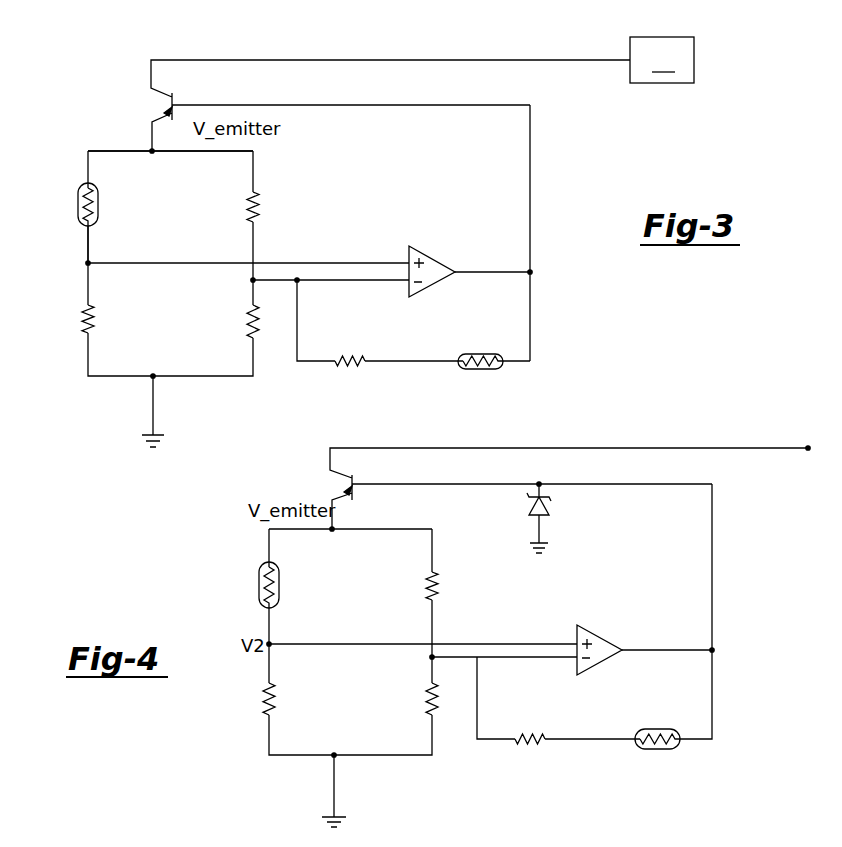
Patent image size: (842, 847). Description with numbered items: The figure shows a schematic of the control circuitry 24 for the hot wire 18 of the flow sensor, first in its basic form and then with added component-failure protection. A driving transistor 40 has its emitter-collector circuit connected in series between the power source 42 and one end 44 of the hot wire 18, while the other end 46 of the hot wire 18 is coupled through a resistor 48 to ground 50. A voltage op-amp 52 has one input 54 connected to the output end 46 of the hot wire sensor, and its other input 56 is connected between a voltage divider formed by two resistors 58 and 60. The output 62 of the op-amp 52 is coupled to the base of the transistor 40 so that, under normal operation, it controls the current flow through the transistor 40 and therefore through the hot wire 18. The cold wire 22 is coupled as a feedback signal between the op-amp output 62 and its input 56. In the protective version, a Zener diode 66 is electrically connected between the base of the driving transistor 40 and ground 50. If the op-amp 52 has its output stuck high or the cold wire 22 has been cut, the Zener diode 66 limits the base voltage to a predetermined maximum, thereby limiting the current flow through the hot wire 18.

In FIG. 3, the hot wire 18 is at (78, 198).
In FIG. 4, the hot wire 18 is at (259, 584).
In FIG. 3, the cold wire 22 is at (473, 369).
In FIG. 4, the cold wire 22 is at (652, 750).
In FIG. 3, the control circuitry 24 is at (70, 396).
In FIG. 3, the driving transistor 40 is at (160, 73).
In FIG. 4, the driving transistor 40 is at (338, 462).
In FIG. 3, the power source 42 is at (662, 60).
In FIG. 3, the one end of the hot wire 44 is at (88, 157).
In FIG. 3, the other end of the hot wire 46 is at (88, 238).
In FIG. 3, the resistor 48 is at (83, 326).
In FIG. 3, the ground 50 is at (153, 452).
In FIG. 4, the ground 50 is at (540, 560).
In FIG. 3, the voltage op-amp 52 is at (430, 246).
In FIG. 4, the voltage op-amp 52 is at (600, 625).
In FIG. 3, the one input of the op-amp 54 is at (185, 263).
In FIG. 3, the other input of the op-amp 56 is at (323, 281).
In FIG. 3, the resistor 58 is at (262, 208).
In FIG. 3, the resistor 60 is at (248, 321).
In FIG. 3, the output of the op-amp 62 is at (467, 274).
In FIG. 4, the Zener diode 66 is at (549, 497).